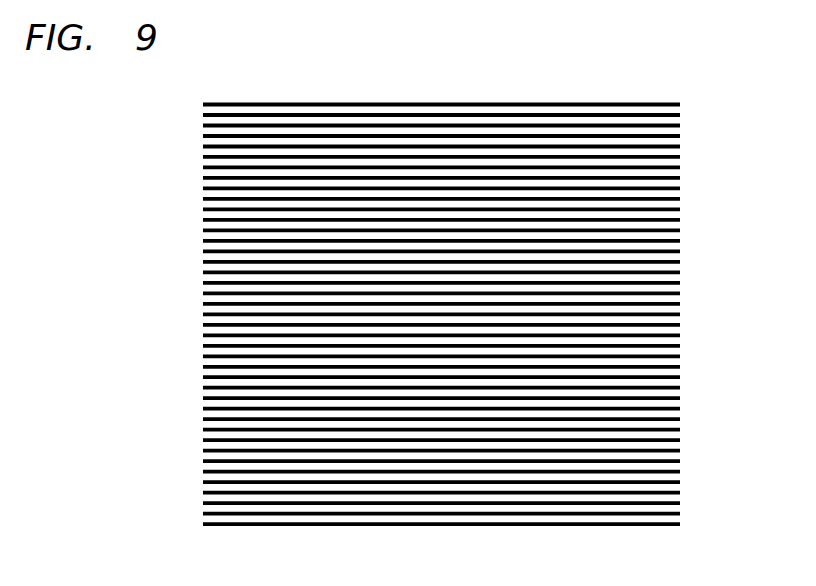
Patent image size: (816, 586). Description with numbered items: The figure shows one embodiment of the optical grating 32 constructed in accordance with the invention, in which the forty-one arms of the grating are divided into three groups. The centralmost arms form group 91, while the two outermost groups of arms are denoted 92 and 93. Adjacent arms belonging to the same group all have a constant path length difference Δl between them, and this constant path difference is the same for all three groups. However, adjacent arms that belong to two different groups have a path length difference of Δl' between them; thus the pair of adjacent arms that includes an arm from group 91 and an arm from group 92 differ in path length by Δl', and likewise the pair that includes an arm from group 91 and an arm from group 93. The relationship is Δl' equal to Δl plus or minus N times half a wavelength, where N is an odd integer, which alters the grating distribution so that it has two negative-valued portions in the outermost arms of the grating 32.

The optical grating 32 is at (572, 99).
The outermost group of arms 92 is at (186, 227).
The centralmost group of arms 91 is at (186, 383).
The outermost group of arms 93 is at (186, 525).